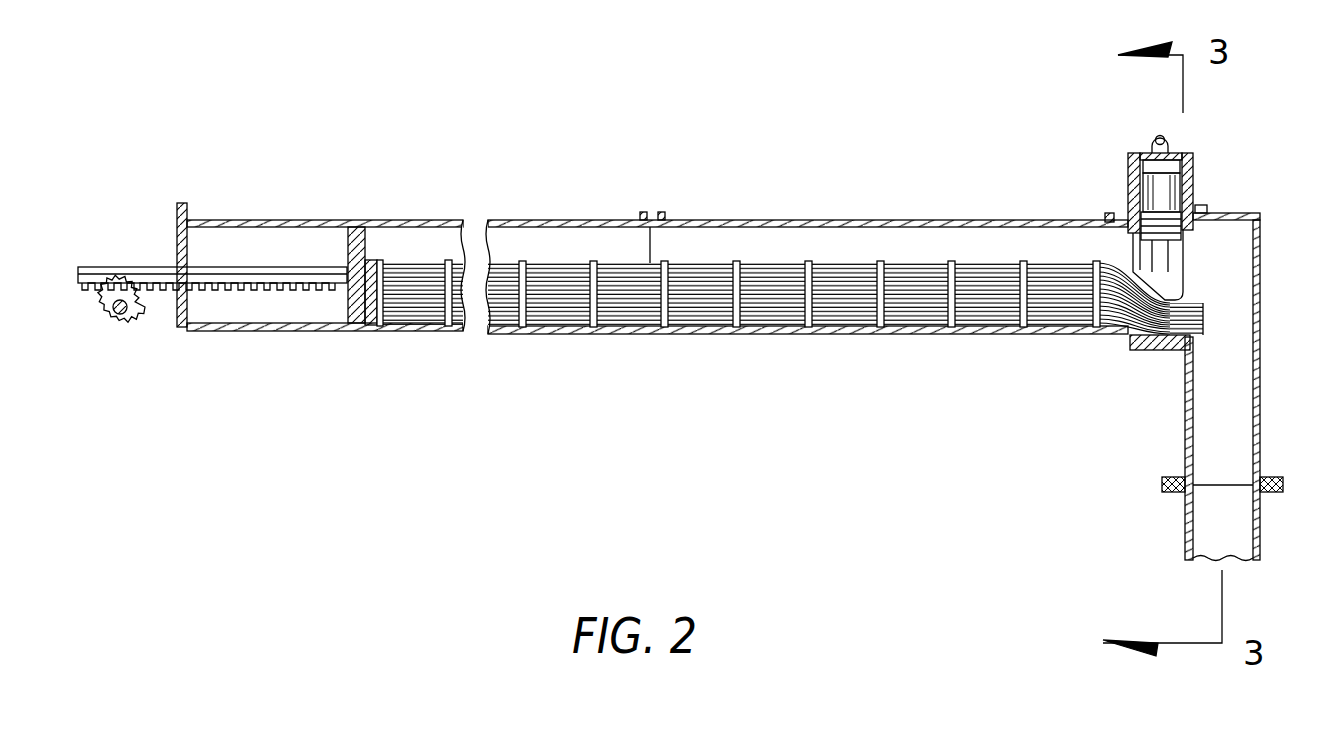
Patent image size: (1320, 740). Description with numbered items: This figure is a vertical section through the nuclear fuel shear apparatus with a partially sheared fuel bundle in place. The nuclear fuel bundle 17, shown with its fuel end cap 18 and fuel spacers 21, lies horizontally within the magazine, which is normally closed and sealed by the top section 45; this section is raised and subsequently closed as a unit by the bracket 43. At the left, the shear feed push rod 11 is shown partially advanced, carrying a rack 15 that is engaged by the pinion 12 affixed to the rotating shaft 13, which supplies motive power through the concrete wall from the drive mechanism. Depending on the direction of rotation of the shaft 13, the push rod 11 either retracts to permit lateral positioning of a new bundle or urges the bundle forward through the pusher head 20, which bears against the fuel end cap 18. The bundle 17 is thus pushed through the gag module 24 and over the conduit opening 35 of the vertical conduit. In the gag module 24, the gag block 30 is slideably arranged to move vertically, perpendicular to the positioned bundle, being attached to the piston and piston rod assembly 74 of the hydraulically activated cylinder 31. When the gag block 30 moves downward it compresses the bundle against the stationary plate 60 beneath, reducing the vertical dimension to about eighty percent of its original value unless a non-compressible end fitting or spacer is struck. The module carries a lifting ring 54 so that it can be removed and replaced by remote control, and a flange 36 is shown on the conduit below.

The shear feed push rod 11 is at (120, 267).
The pinion 12 is at (100, 327).
The rotating shaft 13 is at (125, 312).
The rack 15 is at (285, 290).
The nuclear fuel bundle 17 is at (975, 263).
The fuel end cap 18 is at (380, 262).
The pusher head 20 is at (350, 245).
The fuel spacers 21 is at (808, 262).
The gag module 24 is at (1195, 180).
The gag block 30 is at (1185, 280).
The hydraulically activated cylinder 31 is at (1163, 194).
The conduit opening 35 is at (1231, 360).
The flange 36 is at (1262, 423).
The bracket 43 is at (180, 203).
The top section 45 is at (552, 222).
The lifting ring 54 is at (1155, 133).
The stationary plate 60 is at (1158, 345).
The piston and piston rod assembly 74 is at (1162, 228).